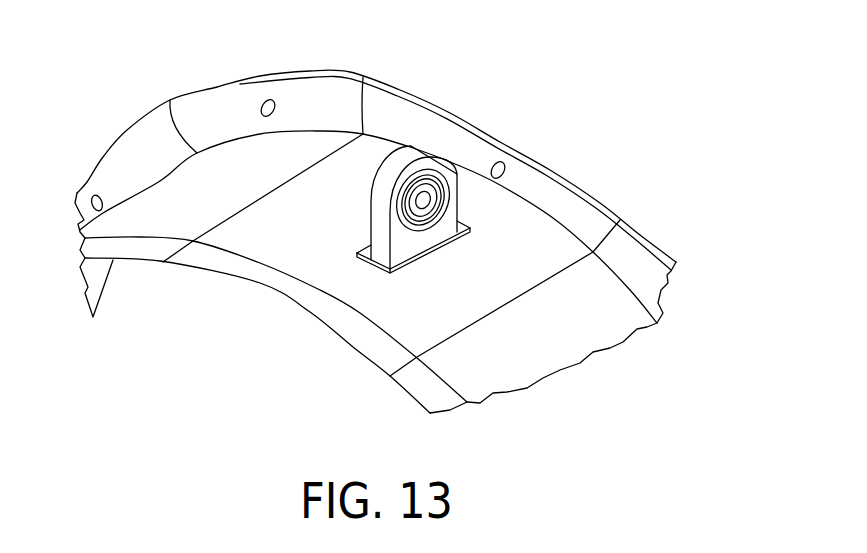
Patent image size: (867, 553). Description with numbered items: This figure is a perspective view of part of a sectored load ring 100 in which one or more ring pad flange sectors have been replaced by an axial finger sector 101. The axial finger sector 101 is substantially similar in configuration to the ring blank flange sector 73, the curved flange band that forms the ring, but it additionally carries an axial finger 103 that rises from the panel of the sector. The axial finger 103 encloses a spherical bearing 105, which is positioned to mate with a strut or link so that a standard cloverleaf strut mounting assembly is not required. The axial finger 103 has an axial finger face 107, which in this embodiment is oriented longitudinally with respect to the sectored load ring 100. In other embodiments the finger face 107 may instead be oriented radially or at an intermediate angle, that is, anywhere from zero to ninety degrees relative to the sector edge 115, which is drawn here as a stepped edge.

The sectored load ring 100 is at (250, 380).
The axial finger sector 101 is at (573, 176).
The ring blank flange sector 73 is at (257, 77).
The axial finger 103 is at (370, 231).
The spherical bearing 105 is at (432, 210).
The axial finger face 107 is at (402, 244).
The sector edge 115 is at (226, 281).